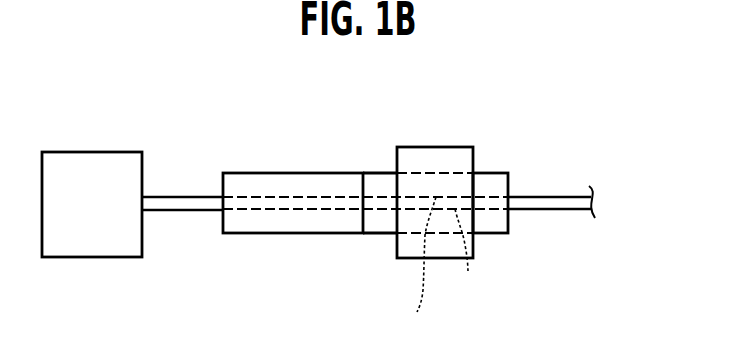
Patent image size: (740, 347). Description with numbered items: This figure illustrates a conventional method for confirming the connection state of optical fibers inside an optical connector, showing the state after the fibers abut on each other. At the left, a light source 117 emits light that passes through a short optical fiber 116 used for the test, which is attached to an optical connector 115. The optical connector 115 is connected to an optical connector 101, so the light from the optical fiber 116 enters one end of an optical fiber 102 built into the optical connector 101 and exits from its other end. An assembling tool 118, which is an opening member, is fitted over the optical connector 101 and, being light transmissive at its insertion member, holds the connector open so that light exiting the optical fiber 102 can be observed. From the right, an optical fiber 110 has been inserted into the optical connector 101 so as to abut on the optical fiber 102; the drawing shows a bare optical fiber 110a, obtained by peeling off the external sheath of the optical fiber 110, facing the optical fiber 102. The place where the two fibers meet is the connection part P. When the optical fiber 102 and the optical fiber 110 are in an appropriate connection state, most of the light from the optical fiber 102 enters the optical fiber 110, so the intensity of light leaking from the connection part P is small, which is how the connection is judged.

The light source 117 is at (97, 151).
The optical fiber 116 is at (187, 196).
The optical connector 115 is at (278, 172).
The optical fiber 102 is at (376, 211).
The assembling tool 118 is at (432, 153).
The optical connector 101 is at (493, 178).
The optical fiber 110 is at (562, 195).
The bare optical fiber 110a is at (468, 260).
The connection part P is at (422, 270).